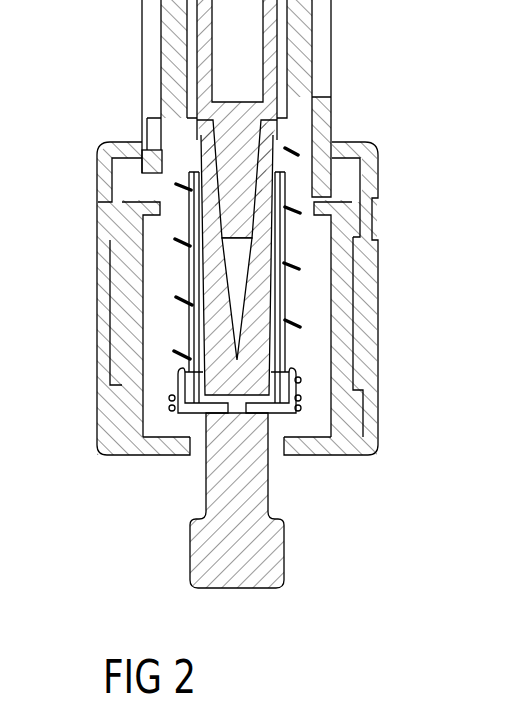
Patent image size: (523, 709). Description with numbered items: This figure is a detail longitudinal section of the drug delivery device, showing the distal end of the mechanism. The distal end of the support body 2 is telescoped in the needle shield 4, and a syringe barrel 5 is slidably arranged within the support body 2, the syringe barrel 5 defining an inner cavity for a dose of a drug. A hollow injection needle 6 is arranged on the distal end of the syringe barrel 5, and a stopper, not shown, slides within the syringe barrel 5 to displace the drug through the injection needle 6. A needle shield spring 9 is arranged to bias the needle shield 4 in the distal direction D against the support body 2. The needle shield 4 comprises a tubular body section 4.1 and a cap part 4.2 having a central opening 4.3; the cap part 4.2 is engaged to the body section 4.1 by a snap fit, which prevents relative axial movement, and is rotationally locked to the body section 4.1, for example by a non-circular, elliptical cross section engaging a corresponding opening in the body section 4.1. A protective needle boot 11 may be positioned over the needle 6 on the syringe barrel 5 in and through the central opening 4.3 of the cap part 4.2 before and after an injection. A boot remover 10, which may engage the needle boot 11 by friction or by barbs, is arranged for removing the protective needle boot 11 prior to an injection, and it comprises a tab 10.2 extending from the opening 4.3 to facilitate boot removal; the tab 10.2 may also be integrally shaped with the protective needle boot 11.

The support body 2 is at (300, 60).
The needle shield 4 is at (97, 270).
The tubular body section 4.1 is at (368, 190).
The cap part 4.2 is at (358, 405).
The central opening 4.3 is at (272, 452).
The syringe barrel 5 is at (200, 68).
The hollow injection needle 6 is at (298, 266).
The needle shield spring 9 is at (190, 297).
The boot remover 10 is at (195, 373).
The tab 10.2 is at (225, 490).
The protective needle boot 11 is at (262, 310).
The distal direction D is at (241, 614).